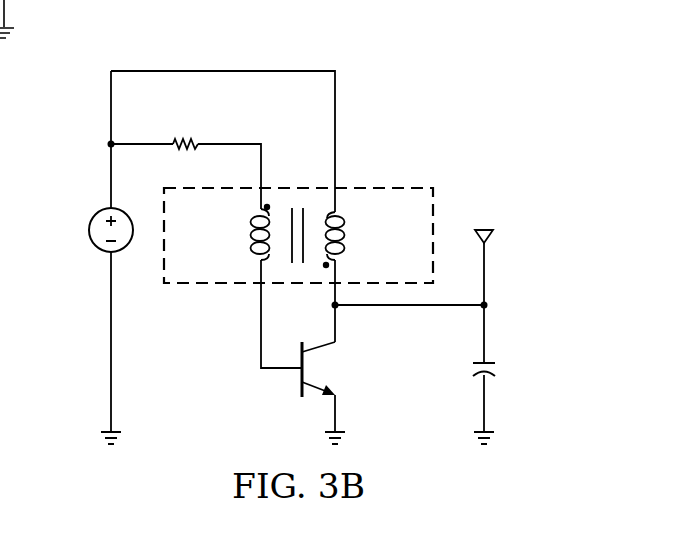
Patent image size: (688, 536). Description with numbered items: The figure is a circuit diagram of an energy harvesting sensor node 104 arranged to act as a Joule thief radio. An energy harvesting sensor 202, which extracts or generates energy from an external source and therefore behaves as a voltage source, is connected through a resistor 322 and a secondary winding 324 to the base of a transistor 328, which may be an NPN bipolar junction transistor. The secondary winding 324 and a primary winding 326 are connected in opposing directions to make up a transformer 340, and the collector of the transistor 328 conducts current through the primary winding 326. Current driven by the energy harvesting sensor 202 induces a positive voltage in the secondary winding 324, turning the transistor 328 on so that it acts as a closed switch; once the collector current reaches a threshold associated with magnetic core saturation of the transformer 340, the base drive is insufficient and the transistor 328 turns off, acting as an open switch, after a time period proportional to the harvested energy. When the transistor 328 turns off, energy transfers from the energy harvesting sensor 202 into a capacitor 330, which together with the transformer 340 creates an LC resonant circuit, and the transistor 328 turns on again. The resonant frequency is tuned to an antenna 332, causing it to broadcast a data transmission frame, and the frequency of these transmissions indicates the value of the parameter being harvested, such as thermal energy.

The energy harvesting sensor node 104 is at (432, 71).
The energy harvesting sensor 202 is at (89, 230).
The resistor 322 is at (183, 141).
The secondary winding 324 is at (256, 237).
The primary winding 326 is at (346, 232).
The transistor 328 is at (298, 380).
The capacitor 330 is at (496, 367).
The antenna 332 is at (488, 227).
The transformer 340 is at (349, 188).